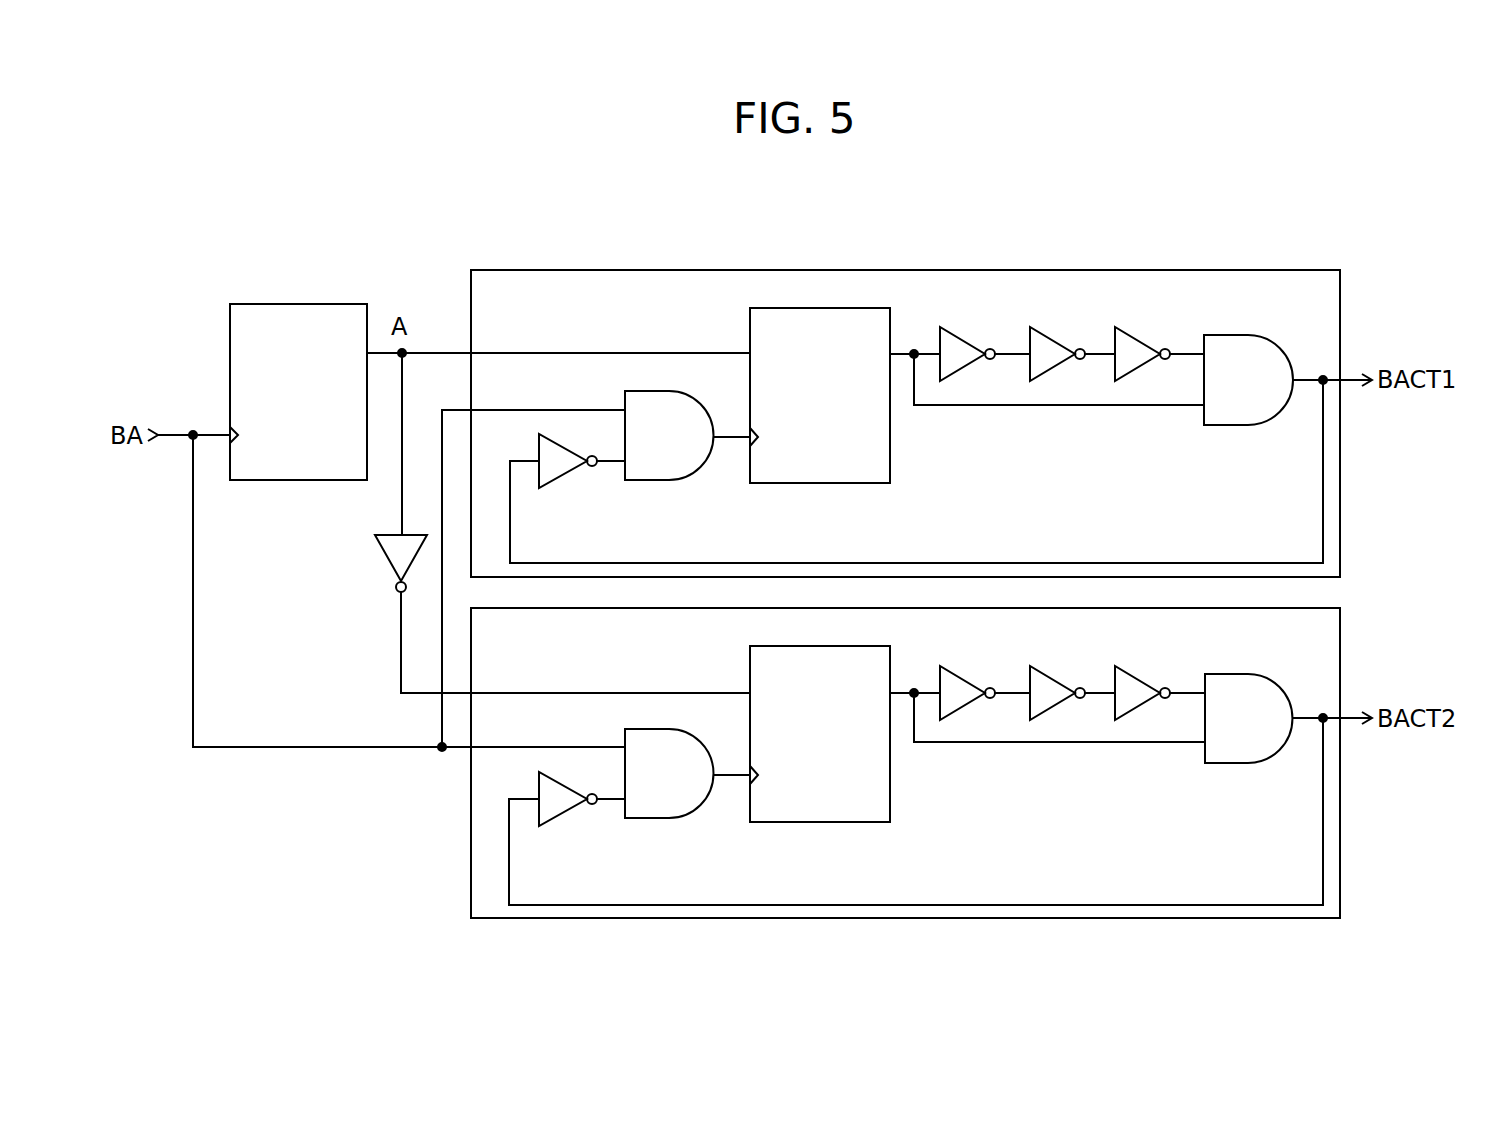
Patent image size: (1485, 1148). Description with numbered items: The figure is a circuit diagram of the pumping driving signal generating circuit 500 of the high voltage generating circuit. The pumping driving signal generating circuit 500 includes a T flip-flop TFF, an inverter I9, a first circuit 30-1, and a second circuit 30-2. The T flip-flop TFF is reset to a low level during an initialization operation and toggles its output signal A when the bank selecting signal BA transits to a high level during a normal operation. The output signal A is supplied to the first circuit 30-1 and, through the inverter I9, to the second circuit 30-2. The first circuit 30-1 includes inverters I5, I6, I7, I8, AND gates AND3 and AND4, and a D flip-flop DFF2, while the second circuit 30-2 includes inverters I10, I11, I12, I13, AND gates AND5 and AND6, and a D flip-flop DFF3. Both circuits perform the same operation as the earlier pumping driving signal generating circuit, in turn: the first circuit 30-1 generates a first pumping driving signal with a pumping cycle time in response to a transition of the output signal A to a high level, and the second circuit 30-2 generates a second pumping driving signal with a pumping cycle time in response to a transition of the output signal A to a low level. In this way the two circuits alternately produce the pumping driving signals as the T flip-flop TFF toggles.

The pumping driving signal generating circuit 500 is at (975, 218).
The first circuit 30-1 is at (1340, 320).
The second circuit 30-2 is at (1340, 658).
The T flip-flop TFF is at (343, 303).
The D flip-flop DFF2 is at (890, 470).
The D flip-flop DFF3 is at (890, 808).
The AND gate AND3 is at (655, 481).
The AND gate AND4 is at (1238, 335).
The AND gate AND5 is at (655, 819).
The AND gate AND6 is at (1238, 674).
The inverter I5 is at (557, 477).
The inverter I6 is at (963, 341).
The inverter I7 is at (1053, 341).
The inverter I8 is at (1138, 341).
The inverter I9 is at (388, 555).
The inverter I10 is at (557, 815).
The inverter I11 is at (963, 680).
The inverter I12 is at (1053, 680).
The inverter I13 is at (1138, 680).